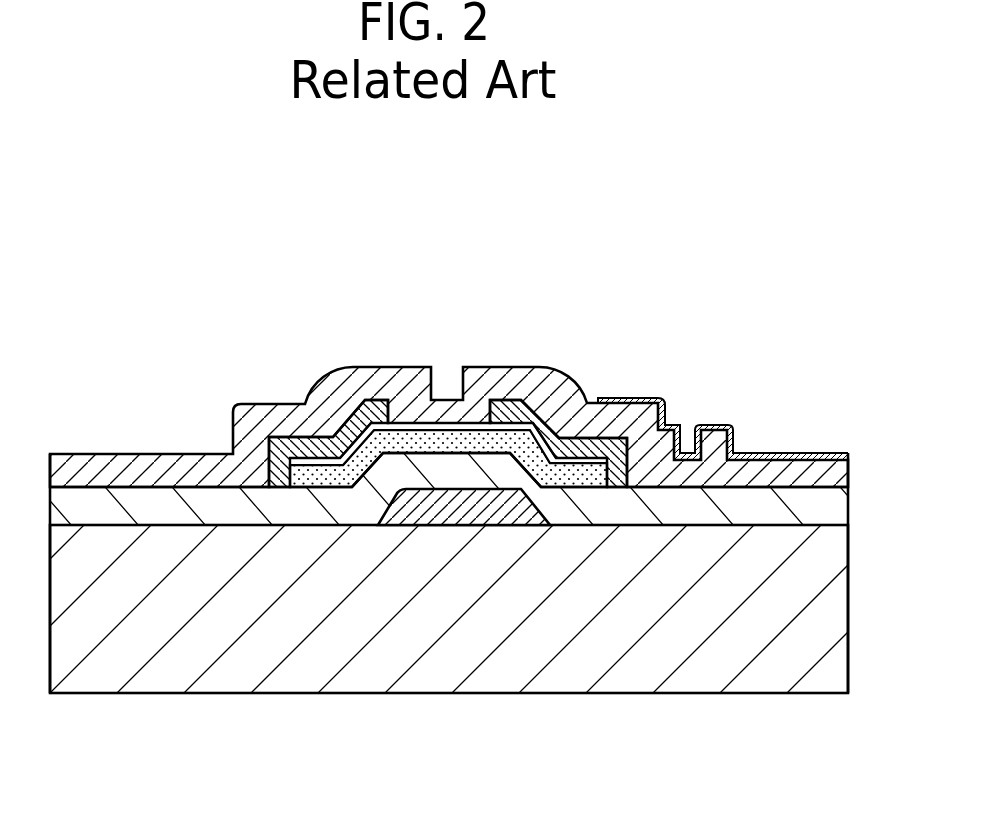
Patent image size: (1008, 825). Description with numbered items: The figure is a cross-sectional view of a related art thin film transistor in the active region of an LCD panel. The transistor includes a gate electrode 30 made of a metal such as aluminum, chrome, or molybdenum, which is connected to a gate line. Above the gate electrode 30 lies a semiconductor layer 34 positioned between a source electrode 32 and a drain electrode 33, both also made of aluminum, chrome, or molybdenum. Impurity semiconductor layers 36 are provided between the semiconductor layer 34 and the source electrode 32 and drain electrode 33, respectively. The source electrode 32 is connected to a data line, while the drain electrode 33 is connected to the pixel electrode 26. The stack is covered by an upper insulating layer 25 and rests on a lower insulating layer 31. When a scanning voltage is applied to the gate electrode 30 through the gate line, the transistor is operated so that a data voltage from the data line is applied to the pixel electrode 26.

The passivation layer 25 is at (512, 380).
The pixel electrode 26 is at (717, 425).
The gate electrode 30 is at (454, 508).
The gate insulating layer 31 is at (822, 511).
The source electrode 32 is at (302, 436).
The drain electrode 33 is at (615, 402).
The semiconductor layer 34 is at (322, 487).
The impurity semiconductor layer 36 is at (402, 398).